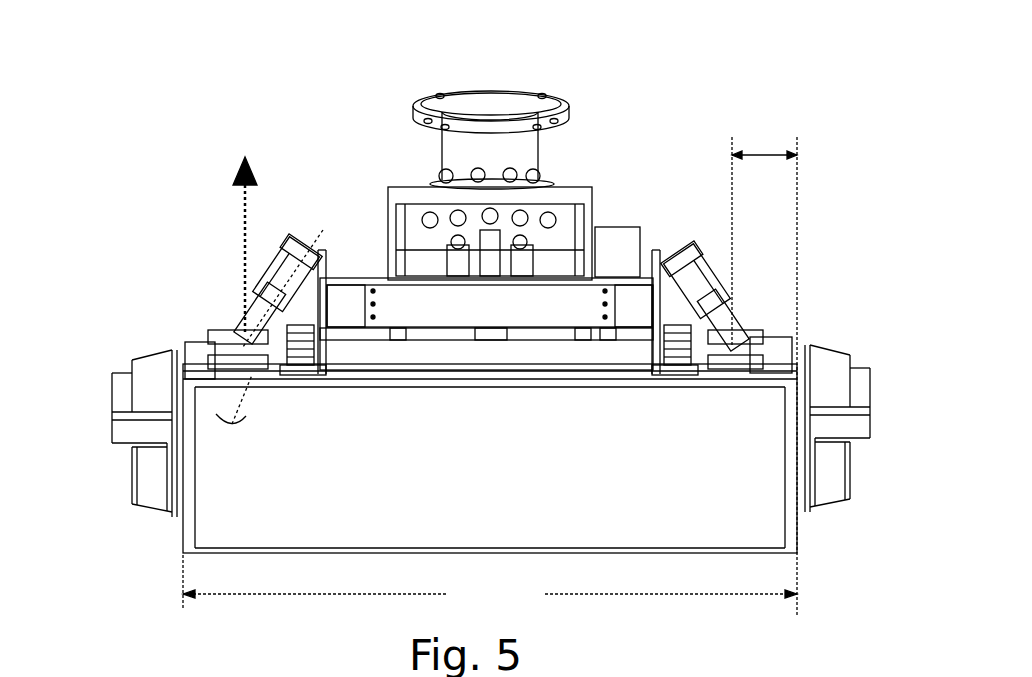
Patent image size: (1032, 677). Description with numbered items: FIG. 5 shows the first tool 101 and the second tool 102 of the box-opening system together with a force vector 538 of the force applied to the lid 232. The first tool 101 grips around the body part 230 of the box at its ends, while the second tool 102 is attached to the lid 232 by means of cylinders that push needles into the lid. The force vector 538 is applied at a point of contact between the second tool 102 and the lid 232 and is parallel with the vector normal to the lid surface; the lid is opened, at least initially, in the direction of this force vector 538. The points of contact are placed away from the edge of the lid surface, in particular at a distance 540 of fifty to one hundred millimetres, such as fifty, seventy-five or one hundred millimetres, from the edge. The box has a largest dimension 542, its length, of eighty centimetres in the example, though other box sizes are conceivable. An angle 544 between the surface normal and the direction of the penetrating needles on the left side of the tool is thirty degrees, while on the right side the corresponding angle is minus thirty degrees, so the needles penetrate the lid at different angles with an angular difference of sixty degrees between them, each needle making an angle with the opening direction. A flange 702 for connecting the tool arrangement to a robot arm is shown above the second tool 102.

The first tool 101 is at (132, 433).
The second tool 102 is at (272, 265).
The body part 230 is at (508, 483).
The lid 232 is at (205, 350).
The force vector 538 is at (234, 255).
The distance 540 is at (765, 150).
The largest dimension 542 is at (490, 584).
The angle 544 is at (232, 425).
The flange 702 is at (520, 108).